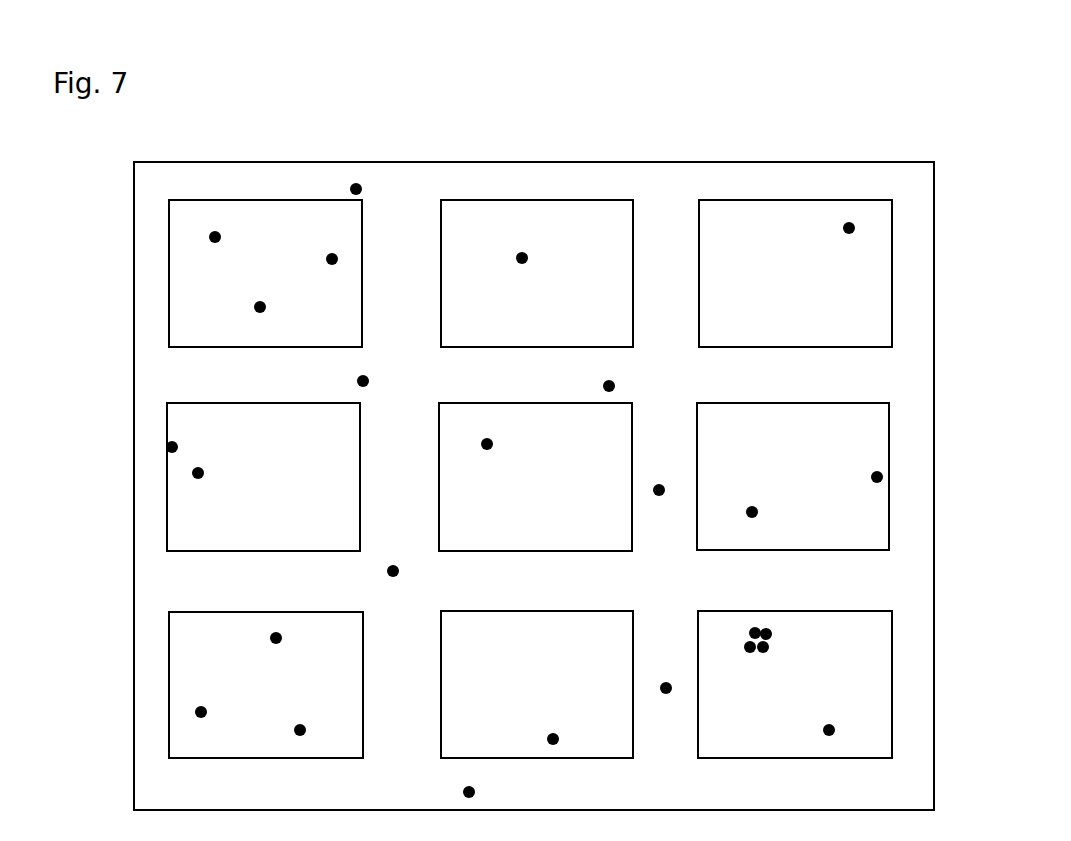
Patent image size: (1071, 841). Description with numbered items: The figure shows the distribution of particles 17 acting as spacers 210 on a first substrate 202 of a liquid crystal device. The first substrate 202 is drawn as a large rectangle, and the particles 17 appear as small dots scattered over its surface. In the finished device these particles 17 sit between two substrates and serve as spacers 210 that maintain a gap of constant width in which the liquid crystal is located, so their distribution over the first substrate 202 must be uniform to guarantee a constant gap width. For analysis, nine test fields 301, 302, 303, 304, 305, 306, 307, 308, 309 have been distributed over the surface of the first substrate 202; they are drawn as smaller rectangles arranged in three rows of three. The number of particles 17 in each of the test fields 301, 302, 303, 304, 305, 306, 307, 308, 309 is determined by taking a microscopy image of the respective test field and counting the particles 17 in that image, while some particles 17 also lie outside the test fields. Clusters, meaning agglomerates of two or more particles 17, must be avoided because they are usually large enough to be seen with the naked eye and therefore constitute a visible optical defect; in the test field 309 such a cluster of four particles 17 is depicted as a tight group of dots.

The particles 17 is at (361, 184).
The spacers 210 is at (560, 447).
The first substrate 202 is at (684, 158).
The test field 301 is at (241, 288).
The test field 302 is at (521, 287).
The test field 303 is at (774, 288).
The test field 304 is at (241, 495).
The test field 305 is at (521, 495).
The test field 306 is at (773, 488).
The test field 307 is at (239, 703).
The test field 308 is at (519, 705).
The test field 309 is at (771, 705).